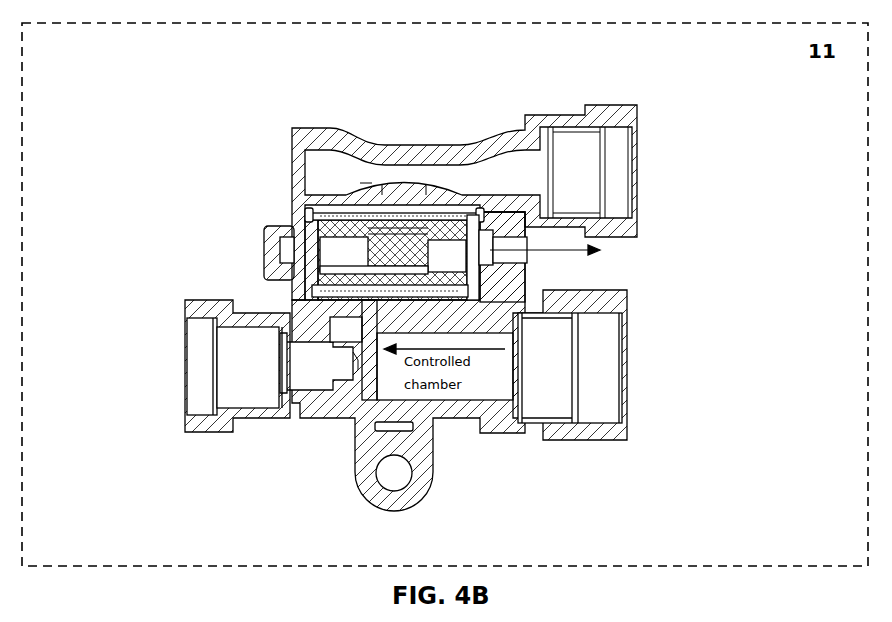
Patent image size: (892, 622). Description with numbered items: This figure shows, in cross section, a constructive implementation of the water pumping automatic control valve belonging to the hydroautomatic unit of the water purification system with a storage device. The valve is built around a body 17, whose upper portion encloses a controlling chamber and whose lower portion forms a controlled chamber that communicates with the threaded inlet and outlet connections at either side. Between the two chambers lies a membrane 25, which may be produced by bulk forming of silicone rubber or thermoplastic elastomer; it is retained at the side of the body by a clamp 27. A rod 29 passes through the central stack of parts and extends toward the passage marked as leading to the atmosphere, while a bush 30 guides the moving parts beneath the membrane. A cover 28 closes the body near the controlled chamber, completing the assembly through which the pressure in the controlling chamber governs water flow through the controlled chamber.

The body 17 is at (292, 135).
The membrane 25 is at (362, 273).
The clamp 27 is at (268, 262).
The cover 28 is at (370, 388).
The rod 29 is at (470, 236).
The bush 30 is at (467, 279).